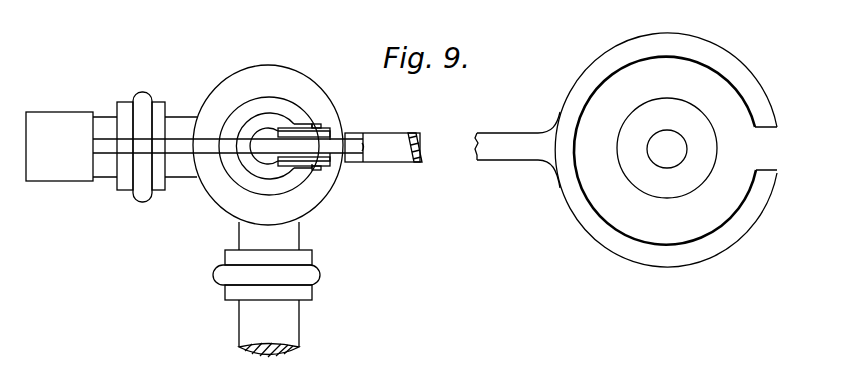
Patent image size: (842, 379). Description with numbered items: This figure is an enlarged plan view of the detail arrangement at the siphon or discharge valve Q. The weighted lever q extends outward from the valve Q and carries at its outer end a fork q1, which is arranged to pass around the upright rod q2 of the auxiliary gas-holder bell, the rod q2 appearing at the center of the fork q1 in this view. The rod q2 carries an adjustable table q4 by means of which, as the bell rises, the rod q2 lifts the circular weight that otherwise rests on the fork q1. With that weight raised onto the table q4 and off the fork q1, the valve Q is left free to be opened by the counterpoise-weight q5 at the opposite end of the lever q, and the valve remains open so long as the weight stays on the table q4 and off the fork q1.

The siphon or discharge valve Q is at (230, 193).
The weighted lever q is at (497, 150).
The fork q1 is at (572, 108).
The upright rod q2 is at (676, 158).
The adjustable table q4 is at (703, 152).
The counterpoise-weight q5 is at (72, 160).